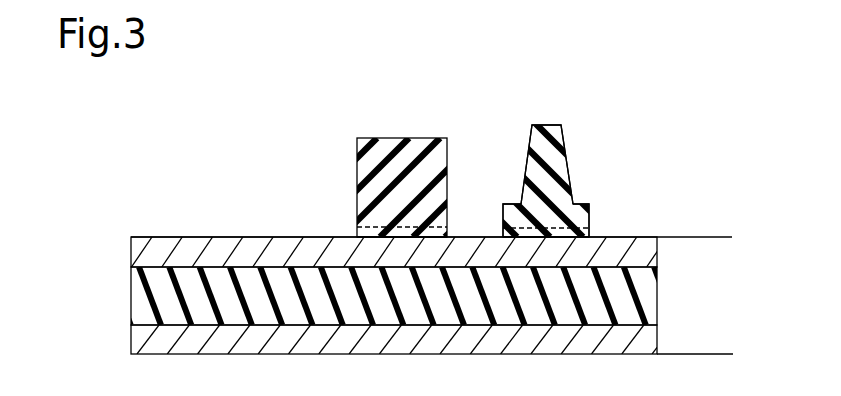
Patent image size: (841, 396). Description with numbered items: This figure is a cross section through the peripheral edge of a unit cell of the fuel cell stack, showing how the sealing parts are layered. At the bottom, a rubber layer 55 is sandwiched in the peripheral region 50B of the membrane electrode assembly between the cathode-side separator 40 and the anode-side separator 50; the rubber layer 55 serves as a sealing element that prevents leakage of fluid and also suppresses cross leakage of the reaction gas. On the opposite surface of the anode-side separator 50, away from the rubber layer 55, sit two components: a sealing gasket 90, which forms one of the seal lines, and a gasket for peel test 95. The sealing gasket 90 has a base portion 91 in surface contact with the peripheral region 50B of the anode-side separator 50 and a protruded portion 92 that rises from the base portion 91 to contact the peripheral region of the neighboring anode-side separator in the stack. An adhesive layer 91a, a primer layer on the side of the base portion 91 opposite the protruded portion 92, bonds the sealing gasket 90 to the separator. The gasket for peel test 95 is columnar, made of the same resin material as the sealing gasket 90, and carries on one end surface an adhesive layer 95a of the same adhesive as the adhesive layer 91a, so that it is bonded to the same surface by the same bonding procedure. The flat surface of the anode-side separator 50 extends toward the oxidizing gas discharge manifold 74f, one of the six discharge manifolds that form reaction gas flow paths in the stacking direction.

The cathode-side separator 40 is at (131, 345).
The rubber layer 55 is at (131, 300).
The anode-side separator 50 is at (131, 255).
The peripheral region 50B is at (174, 237).
The oxidizing gas discharge manifold 74f is at (706, 247).
The gasket for peel test 95 is at (402, 137).
The adhesive layer 95a is at (357, 236).
The sealing gasket 90 is at (578, 122).
The protruded portion 92 is at (569, 162).
The base portion 91 is at (582, 203).
The adhesive layer 91a is at (592, 233).